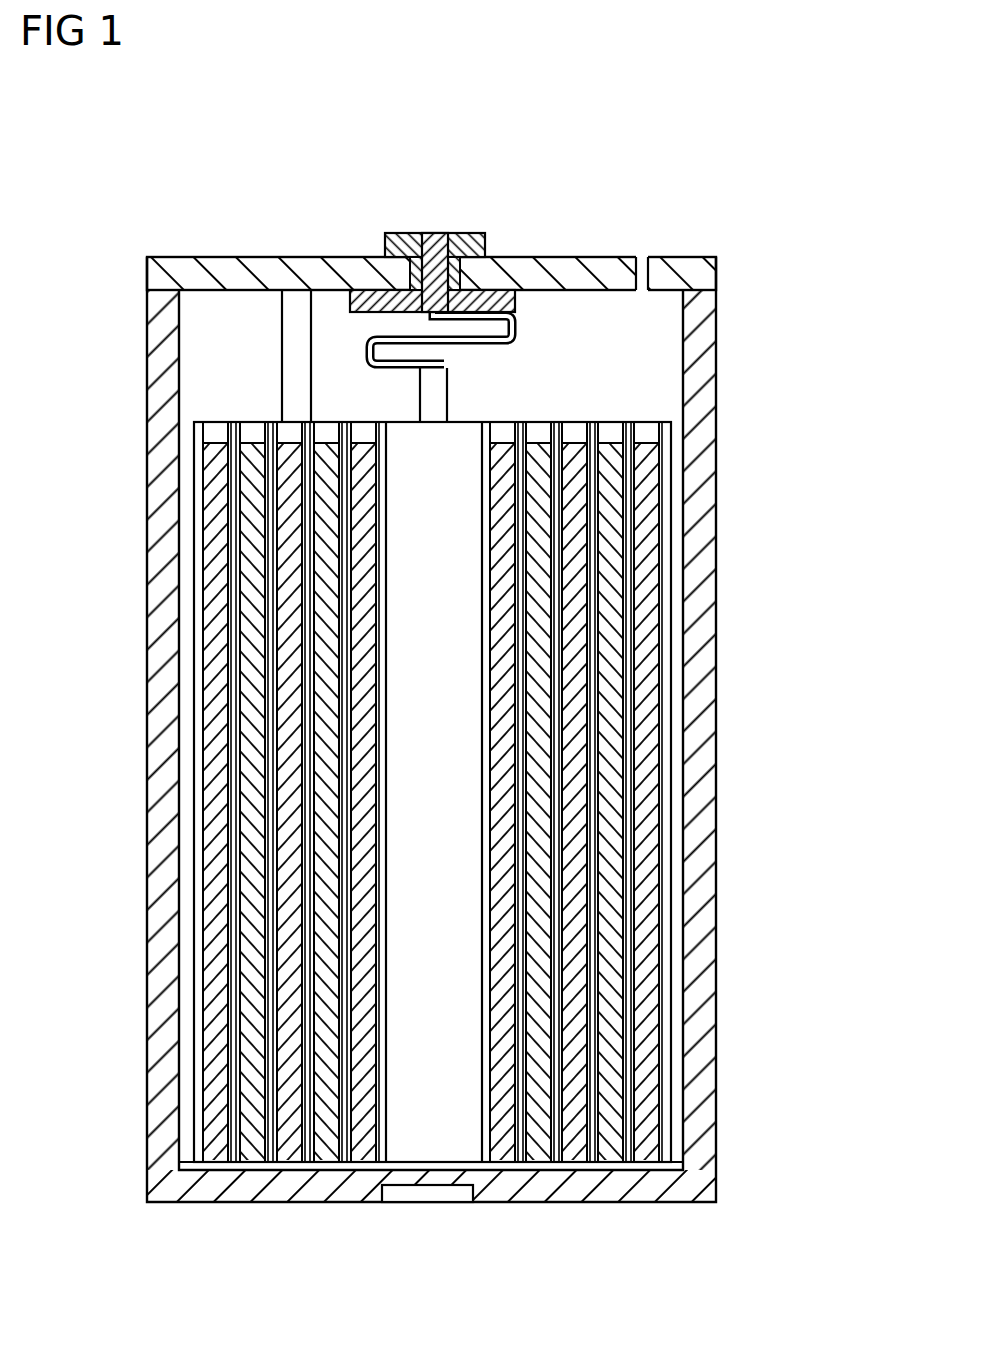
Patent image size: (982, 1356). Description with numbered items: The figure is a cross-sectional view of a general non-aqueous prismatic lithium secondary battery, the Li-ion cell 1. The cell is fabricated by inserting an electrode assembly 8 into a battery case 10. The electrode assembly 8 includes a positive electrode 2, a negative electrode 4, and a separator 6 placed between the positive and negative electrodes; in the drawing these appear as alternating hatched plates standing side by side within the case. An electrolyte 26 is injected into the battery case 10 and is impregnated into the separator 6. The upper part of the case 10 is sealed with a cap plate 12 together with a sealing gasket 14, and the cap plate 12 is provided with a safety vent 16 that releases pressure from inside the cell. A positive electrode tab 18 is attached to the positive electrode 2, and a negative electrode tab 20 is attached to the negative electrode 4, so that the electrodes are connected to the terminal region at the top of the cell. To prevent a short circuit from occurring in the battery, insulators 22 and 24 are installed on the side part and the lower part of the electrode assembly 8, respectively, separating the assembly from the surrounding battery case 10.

The Li-ion cell 1 is at (464, 720).
The positive electrode 2 is at (643, 1020).
The negative electrode 4 is at (253, 968).
The separator 6 is at (225, 1098).
The electrode assembly 8 is at (435, 729).
The battery case 10 is at (152, 392).
The cap plate 12 is at (554, 258).
The sealing gasket 14 is at (386, 233).
The safety vent 16 is at (644, 258).
The positive electrode tab 18 is at (278, 258).
The negative electrode tab 20 is at (431, 233).
The insulator 22 is at (185, 690).
The insulator 24 is at (318, 1176).
The electrolyte 26 is at (625, 1092).